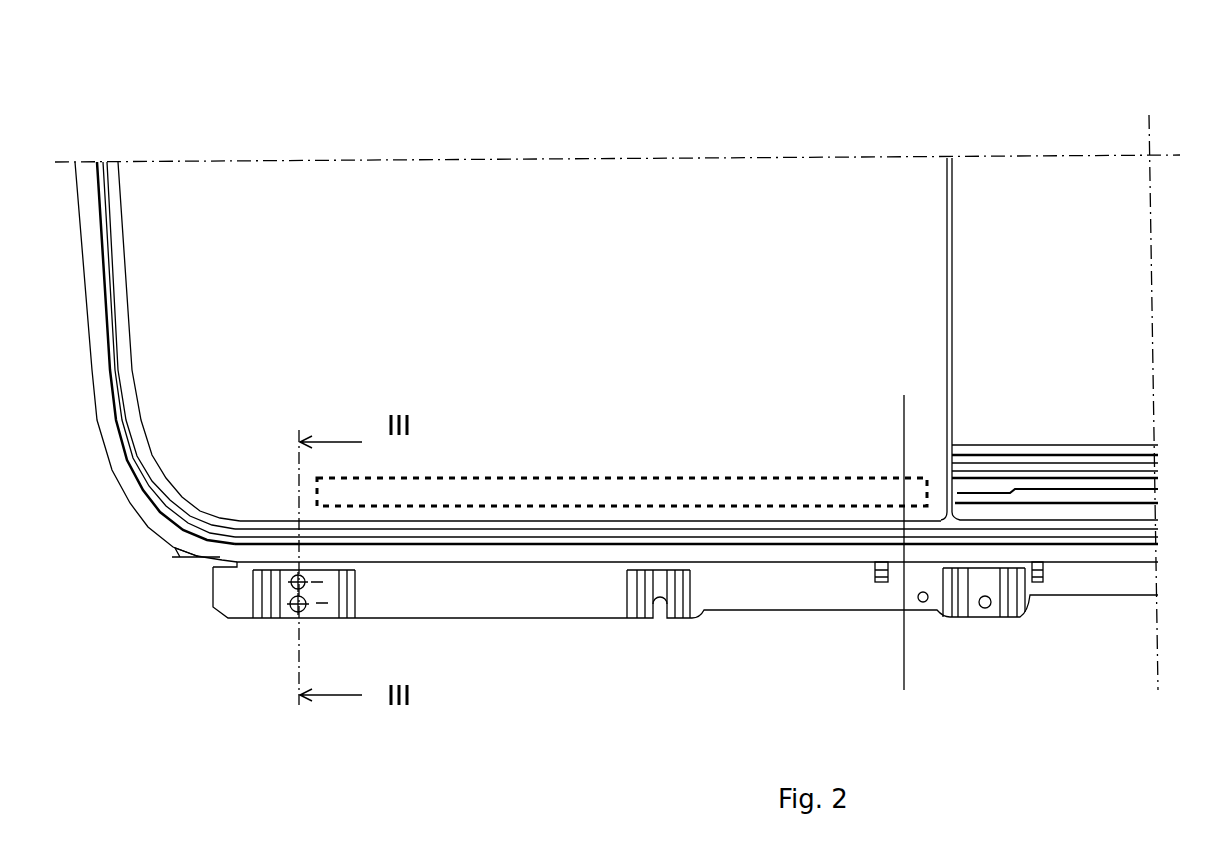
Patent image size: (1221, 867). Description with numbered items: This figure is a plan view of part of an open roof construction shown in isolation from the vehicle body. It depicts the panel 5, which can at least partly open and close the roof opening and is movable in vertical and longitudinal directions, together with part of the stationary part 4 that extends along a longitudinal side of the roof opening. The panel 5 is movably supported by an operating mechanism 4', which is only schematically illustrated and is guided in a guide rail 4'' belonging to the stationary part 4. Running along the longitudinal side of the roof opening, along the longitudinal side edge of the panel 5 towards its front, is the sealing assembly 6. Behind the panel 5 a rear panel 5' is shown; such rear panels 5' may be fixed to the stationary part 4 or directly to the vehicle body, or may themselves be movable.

The stationary part 4 is at (685, 662).
The operating mechanism 4' is at (622, 612).
The guide rail 4'' is at (1057, 599).
The panel 5 is at (213, 300).
The rear panel 5' is at (1049, 275).
The sealing assembly 6 is at (575, 565).